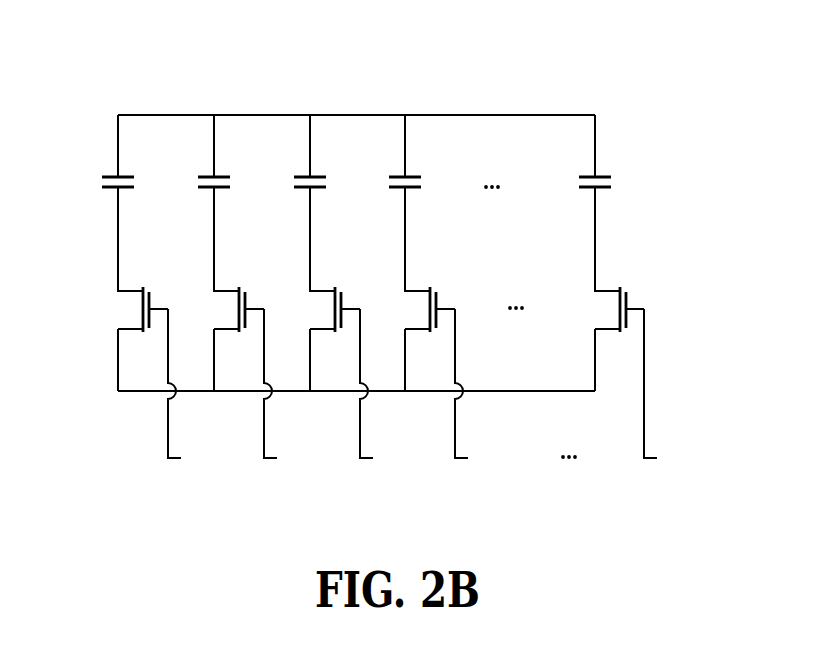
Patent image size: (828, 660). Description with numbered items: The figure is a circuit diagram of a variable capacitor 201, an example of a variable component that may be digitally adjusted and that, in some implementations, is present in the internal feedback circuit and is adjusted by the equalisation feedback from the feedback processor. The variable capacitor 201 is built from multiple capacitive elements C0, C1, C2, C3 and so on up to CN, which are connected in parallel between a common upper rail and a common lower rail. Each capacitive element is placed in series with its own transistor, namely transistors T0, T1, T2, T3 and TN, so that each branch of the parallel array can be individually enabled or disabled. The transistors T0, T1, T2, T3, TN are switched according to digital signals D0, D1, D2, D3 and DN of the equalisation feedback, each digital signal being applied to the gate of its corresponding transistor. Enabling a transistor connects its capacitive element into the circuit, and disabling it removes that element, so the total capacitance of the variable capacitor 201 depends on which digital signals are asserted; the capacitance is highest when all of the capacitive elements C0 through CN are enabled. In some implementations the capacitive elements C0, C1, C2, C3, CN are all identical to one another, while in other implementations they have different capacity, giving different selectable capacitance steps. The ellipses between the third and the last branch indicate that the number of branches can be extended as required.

The variable capacitor 201 is at (118, 67).
The capacitive element C0 is at (103, 177).
The capacitive element C1 is at (199, 177).
The capacitive element C2 is at (295, 177).
The capacitive element C3 is at (390, 177).
The capacitive element CN is at (579, 177).
The transistor T0 is at (128, 315).
The transistor T1 is at (224, 315).
The transistor T2 is at (320, 315).
The transistor T3 is at (415, 315).
The transistor TN is at (605, 315).
The digital signal D0 is at (189, 396).
The digital signal D1 is at (285, 396).
The digital signal D2 is at (381, 396).
The digital signal D3 is at (476, 396).
The digital signal DN is at (665, 396).